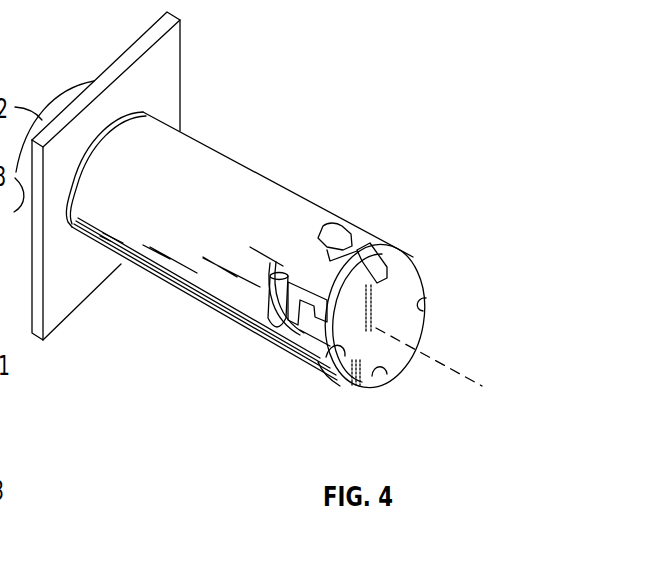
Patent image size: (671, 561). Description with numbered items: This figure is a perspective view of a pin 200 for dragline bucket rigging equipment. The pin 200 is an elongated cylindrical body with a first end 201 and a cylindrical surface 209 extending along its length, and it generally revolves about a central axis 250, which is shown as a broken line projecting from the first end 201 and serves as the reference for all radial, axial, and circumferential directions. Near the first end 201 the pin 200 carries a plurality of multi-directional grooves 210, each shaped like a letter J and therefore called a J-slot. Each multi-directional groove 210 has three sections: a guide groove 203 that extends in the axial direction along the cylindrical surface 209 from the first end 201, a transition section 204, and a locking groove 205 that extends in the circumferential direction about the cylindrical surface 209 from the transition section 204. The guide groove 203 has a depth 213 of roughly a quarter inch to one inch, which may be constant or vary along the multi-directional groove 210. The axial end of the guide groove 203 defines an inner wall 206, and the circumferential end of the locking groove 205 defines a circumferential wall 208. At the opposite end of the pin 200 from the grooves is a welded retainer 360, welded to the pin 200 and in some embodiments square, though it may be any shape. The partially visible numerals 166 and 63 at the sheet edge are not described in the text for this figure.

The welded retainer 360 is at (170, 73).
The pin 200 is at (239, 246).
The cylindrical surface 209 is at (192, 146).
The first end 201 is at (400, 268).
The circumferential wall 208 is at (336, 236).
The multi-directional groove 210 is at (370, 233).
The locking groove 205 is at (280, 273).
The inner wall 206 is at (273, 290).
The transition section 204 is at (290, 337).
The guide groove 203 is at (307, 345).
The depth 213 is at (325, 385).
The axis 250 is at (421, 346).
The component 166 is at (14, 296).
The component 63 is at (12, 213).